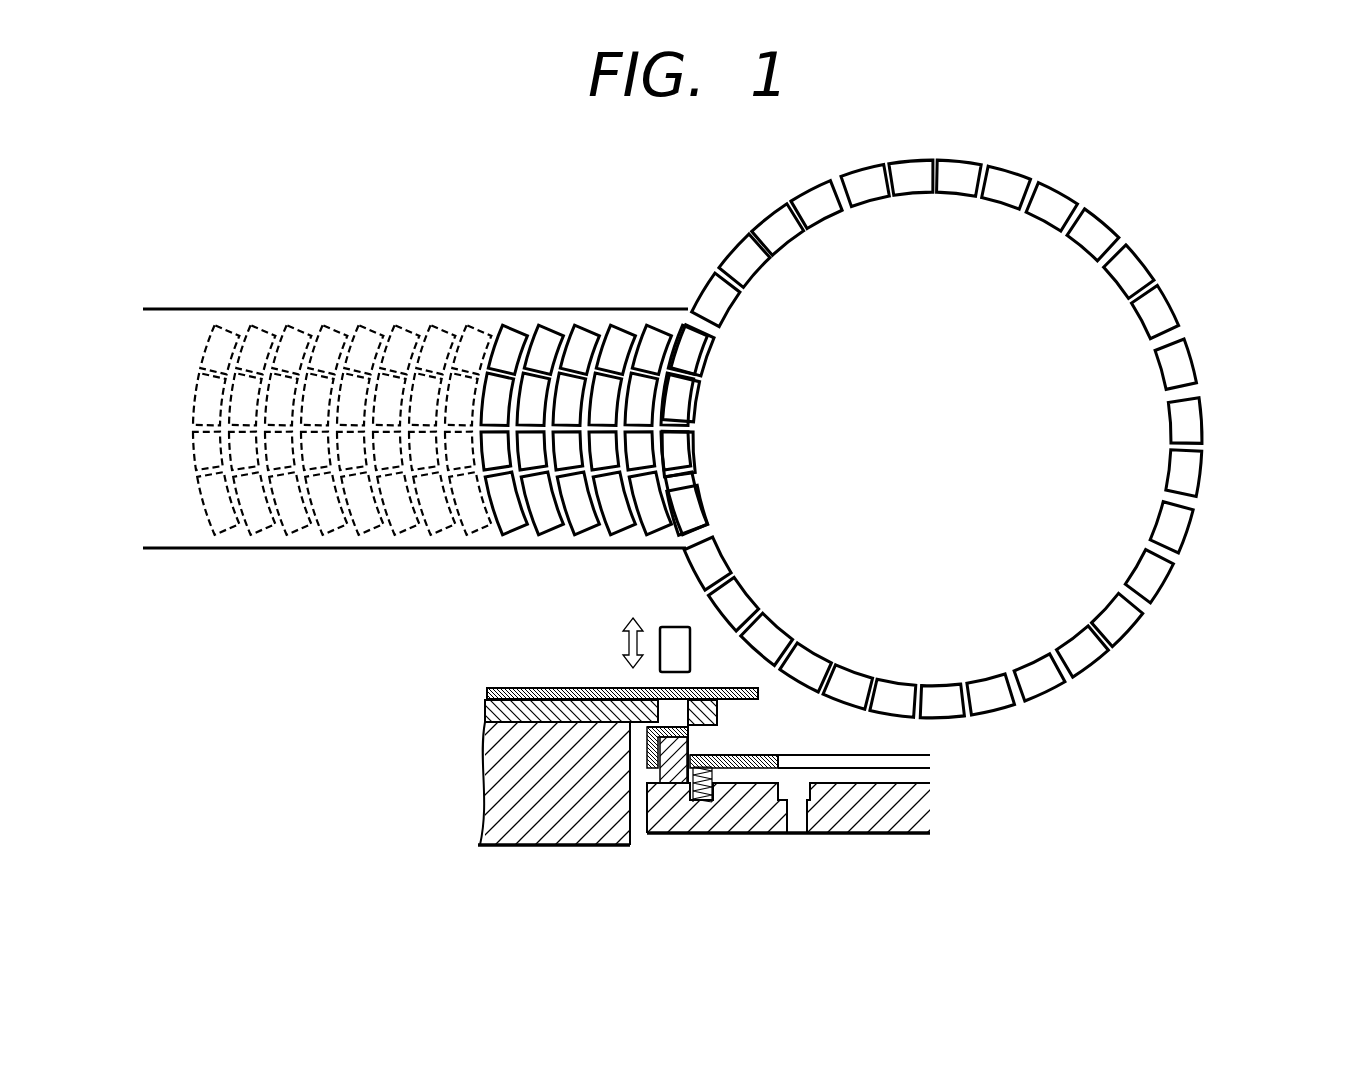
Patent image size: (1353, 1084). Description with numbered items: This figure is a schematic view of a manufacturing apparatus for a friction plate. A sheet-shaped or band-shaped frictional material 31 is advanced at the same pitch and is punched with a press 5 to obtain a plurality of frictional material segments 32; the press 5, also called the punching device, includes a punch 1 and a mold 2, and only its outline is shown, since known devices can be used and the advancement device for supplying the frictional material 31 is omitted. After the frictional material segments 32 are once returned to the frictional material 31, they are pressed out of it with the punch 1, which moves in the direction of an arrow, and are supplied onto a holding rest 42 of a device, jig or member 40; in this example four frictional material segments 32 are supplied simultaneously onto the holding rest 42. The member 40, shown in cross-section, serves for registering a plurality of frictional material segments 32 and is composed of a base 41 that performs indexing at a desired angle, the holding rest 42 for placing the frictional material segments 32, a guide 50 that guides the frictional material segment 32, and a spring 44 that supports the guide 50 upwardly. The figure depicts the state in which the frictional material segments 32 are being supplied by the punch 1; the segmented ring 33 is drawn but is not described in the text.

The punch 1 is at (671, 632).
The mold 2 is at (576, 700).
The press 5 is at (531, 879).
The frictional material 31 is at (374, 322).
The frictional material segments 32 is at (654, 342).
The rotary wheel 33 is at (1203, 337).
The member 40 is at (815, 870).
The base 41 is at (900, 825).
The holding rest 42 is at (682, 752).
The spring 44 is at (702, 800).
The guide 50 is at (763, 757).